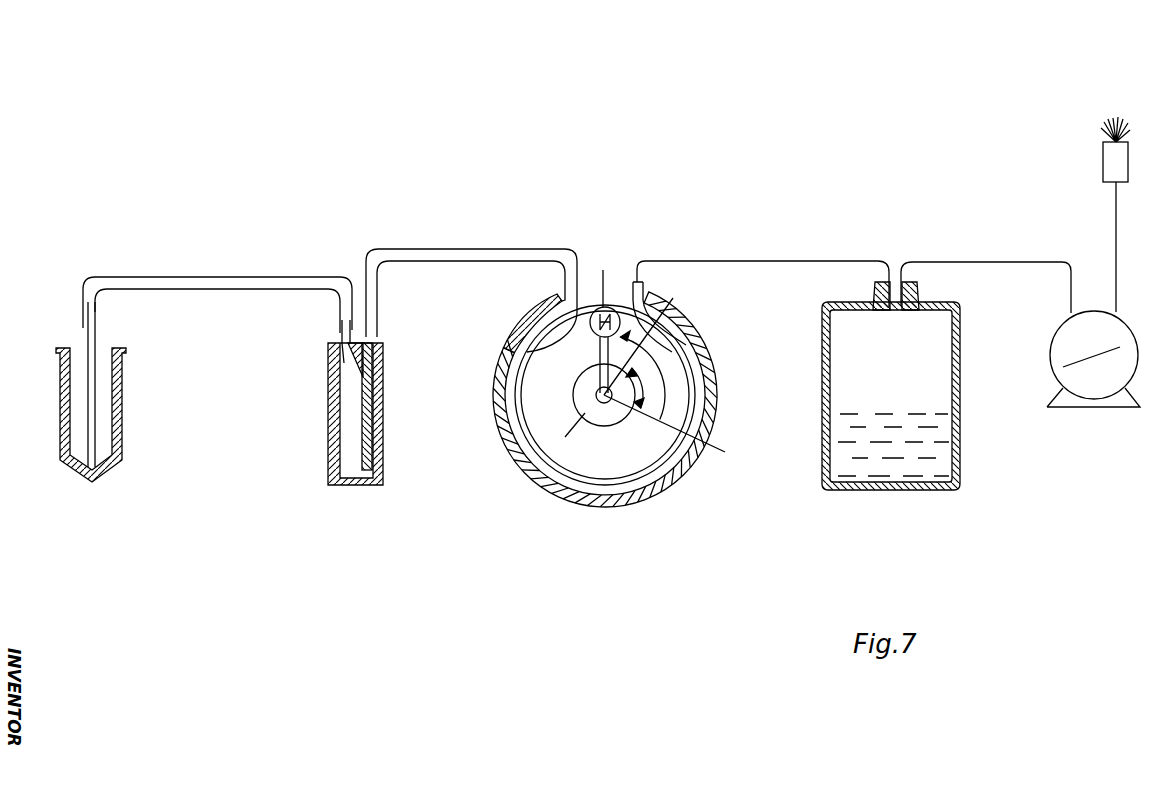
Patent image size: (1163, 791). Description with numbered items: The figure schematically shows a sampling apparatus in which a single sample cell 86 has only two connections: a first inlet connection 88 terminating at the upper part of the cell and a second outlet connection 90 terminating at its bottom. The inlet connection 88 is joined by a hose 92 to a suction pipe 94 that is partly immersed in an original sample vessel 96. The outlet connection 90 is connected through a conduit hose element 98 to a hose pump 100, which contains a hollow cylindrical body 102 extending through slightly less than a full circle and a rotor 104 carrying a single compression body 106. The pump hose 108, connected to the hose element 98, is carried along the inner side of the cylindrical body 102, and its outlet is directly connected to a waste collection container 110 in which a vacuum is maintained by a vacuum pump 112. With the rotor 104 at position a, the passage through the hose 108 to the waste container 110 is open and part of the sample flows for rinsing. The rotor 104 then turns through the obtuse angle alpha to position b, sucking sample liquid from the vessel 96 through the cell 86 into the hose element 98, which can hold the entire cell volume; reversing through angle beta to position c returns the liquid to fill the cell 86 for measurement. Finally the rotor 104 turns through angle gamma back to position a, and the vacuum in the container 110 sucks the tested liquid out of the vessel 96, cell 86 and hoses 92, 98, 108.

The sample cell 86 is at (382, 397).
The first (inlet) connection 88 is at (342, 343).
The second (outlet) connection 90 is at (377, 343).
The hose 92 is at (263, 275).
The suction pipe 94 is at (93, 350).
The original sample vessel 96 is at (120, 417).
The conduit hose element 98 is at (473, 254).
The hose pump 100 is at (594, 366).
The hollow cylindrical body 102 is at (697, 347).
The rotor 104 is at (598, 343).
The compression body 106 is at (610, 308).
The pump hose 108 is at (595, 485).
The waste collection container 110 is at (947, 347).
The vacuum pump 112 is at (1120, 333).